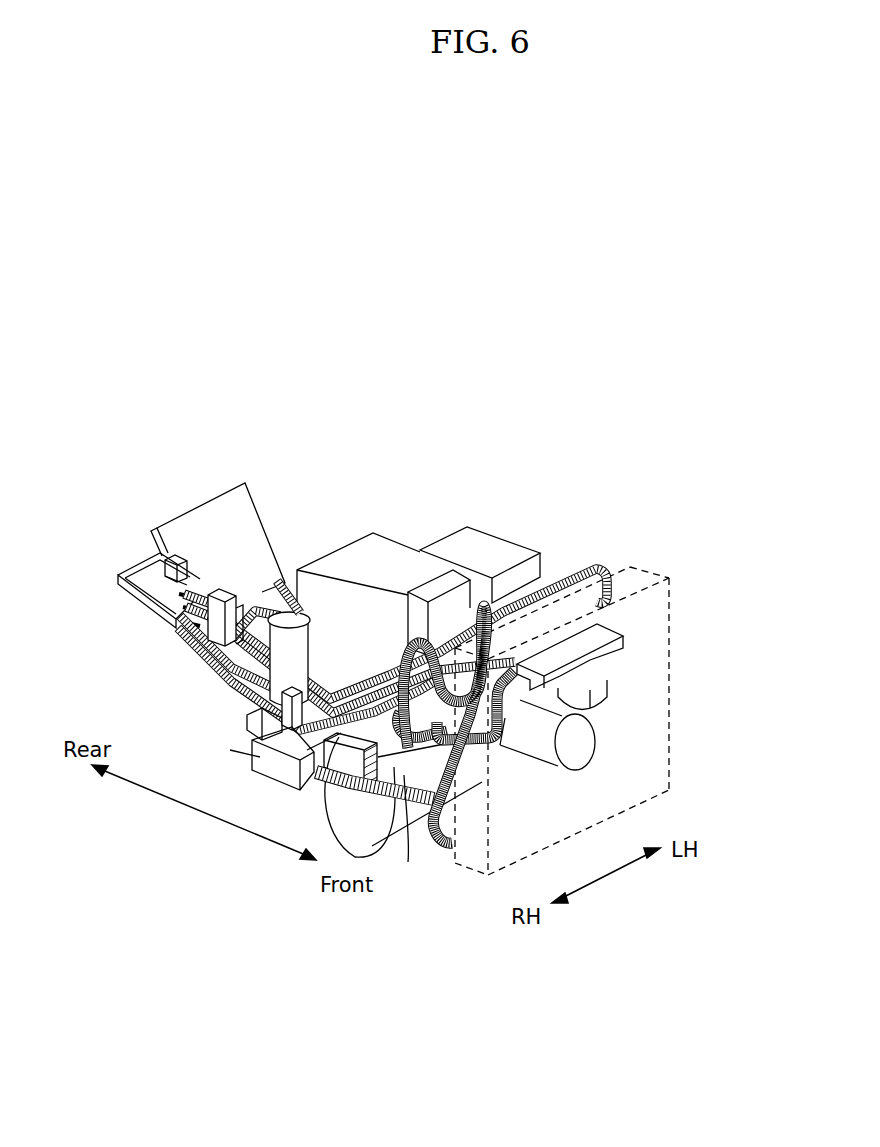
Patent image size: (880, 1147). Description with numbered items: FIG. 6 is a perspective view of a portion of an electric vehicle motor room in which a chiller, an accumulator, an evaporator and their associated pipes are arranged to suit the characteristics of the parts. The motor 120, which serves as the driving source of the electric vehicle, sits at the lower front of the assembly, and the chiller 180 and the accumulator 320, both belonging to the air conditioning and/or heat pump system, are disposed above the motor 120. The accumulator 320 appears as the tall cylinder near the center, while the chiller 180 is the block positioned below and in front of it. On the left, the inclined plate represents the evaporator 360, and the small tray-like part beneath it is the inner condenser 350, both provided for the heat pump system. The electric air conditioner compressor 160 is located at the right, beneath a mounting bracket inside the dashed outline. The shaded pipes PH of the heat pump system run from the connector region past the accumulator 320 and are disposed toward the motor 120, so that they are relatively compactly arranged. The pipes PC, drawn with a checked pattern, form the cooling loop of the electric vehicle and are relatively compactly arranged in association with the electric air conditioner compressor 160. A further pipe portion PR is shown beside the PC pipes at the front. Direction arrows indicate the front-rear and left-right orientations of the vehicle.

The evaporator 360 is at (212, 517).
The inner condenser 350 is at (133, 592).
The accumulator 320 is at (278, 641).
The chiller 180 is at (267, 757).
The electric air conditioner compressor 160 is at (575, 745).
The motor 120 is at (380, 850).
The pipe of the heat pump system PH is at (342, 742).
The harness portion PR is at (408, 822).
The pipes forming a cooling loop PC is at (436, 825).